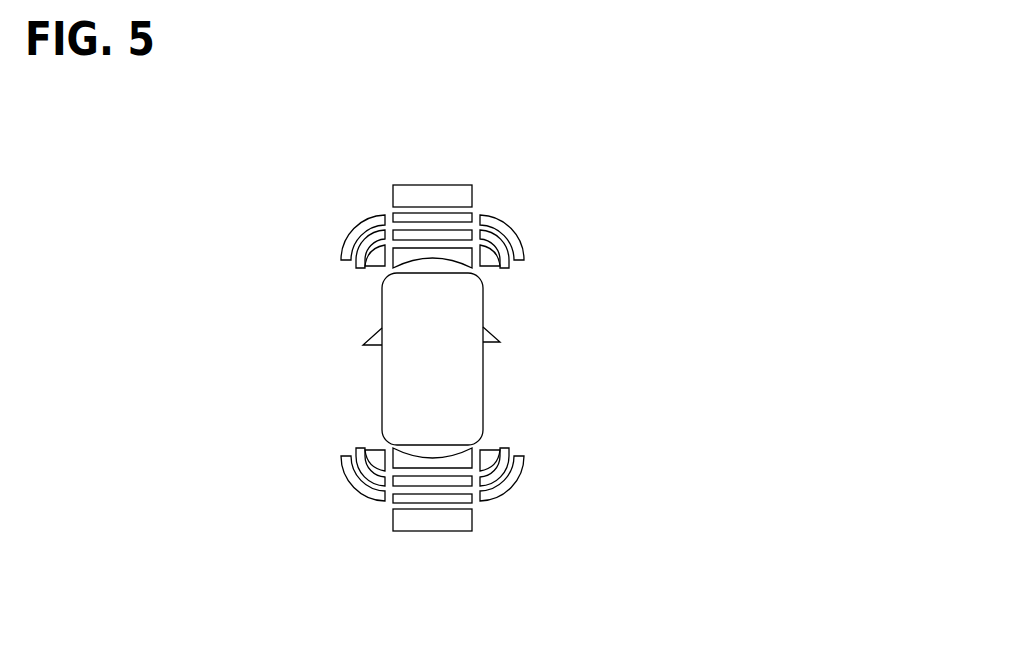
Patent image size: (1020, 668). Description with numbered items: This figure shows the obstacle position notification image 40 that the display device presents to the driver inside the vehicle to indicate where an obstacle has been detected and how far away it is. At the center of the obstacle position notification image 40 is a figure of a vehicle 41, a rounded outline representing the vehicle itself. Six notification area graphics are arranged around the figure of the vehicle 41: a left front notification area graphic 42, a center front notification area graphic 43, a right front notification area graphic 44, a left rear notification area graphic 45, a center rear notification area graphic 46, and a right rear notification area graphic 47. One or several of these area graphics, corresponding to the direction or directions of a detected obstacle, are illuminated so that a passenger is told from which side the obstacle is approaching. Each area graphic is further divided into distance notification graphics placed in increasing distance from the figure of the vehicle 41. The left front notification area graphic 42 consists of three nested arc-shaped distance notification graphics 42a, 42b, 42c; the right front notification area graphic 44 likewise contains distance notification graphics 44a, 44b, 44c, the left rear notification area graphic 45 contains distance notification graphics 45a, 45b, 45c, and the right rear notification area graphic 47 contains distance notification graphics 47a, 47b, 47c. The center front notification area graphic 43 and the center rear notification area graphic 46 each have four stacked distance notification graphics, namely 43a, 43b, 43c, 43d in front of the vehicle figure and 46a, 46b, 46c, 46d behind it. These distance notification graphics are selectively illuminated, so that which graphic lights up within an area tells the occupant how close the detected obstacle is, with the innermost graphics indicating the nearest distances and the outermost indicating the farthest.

The obstacle position notification image 40 is at (628, 269).
The figure of a vehicle 41 is at (484, 359).
The left front notification area graphic 42 is at (319, 206).
The distance notification graphic 42a is at (364, 266).
The distance notification graphic 42b is at (358, 266).
The distance notification graphic 42c is at (342, 243).
The center front notification area graphic 43 is at (451, 137).
The distance notification graphic 43a is at (398, 248).
The distance notification graphic 43b is at (402, 230).
The distance notification graphic 43c is at (426, 213).
The distance notification graphic 43d is at (466, 185).
The right front notification area graphic 44 is at (529, 199).
The distance notification graphic 44a is at (486, 267).
The distance notification graphic 44b is at (508, 268).
The distance notification graphic 44c is at (524, 262).
The left rear notification area graphic 45 is at (331, 530).
The distance notification graphic 45a is at (368, 448).
The distance notification graphic 45b is at (358, 452).
The distance notification graphic 45c is at (342, 466).
The center rear notification area graphic 46 is at (465, 569).
The distance notification graphic 46a is at (393, 470).
The distance notification graphic 46b is at (397, 486).
The distance notification graphic 46c is at (425, 503).
The distance notification graphic 46d is at (467, 531).
The right rear notification area graphic 47 is at (554, 517).
The distance notification graphic 47a is at (490, 447).
The distance notification graphic 47b is at (504, 452).
The distance notification graphic 47c is at (524, 462).